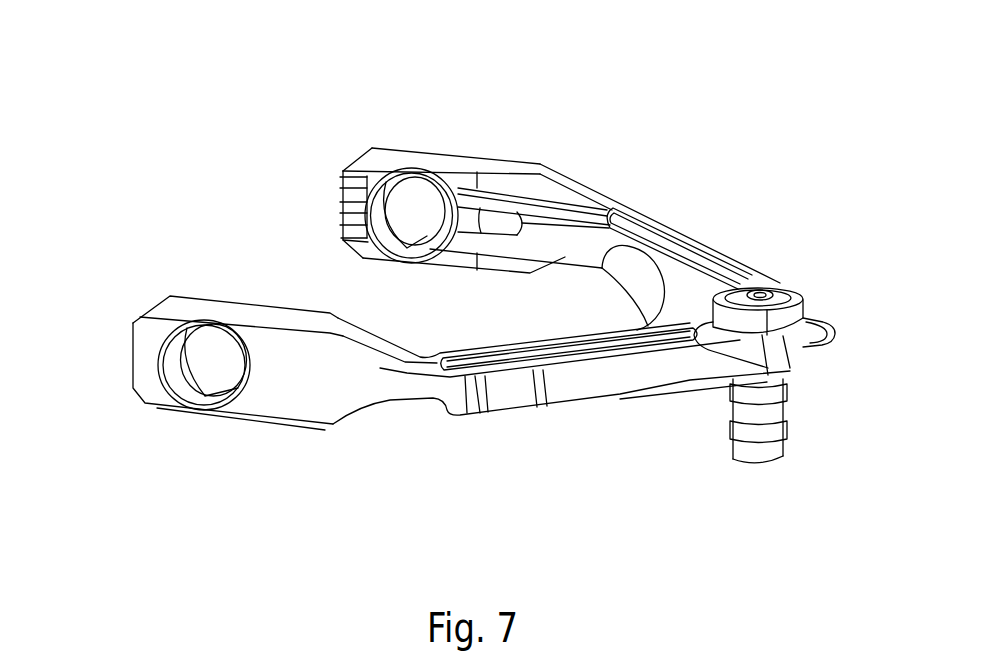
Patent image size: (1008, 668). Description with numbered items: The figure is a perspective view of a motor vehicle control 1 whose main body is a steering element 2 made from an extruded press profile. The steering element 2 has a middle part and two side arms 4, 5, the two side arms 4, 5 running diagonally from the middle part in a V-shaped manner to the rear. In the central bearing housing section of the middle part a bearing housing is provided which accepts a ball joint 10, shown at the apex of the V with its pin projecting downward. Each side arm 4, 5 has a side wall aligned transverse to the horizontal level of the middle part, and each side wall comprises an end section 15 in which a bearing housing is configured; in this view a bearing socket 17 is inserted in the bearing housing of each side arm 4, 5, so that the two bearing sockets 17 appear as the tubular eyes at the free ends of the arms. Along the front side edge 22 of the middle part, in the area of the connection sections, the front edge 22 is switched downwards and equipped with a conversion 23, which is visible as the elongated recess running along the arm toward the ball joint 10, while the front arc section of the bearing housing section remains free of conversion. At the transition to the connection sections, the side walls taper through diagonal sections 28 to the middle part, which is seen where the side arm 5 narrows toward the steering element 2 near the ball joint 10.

The motor vehicle control 1 is at (747, 107).
The steering element 2 is at (716, 248).
The side arm 4 is at (319, 392).
The side arm 5 is at (512, 165).
The ball joint 10 is at (803, 280).
The end section 15 is at (153, 410).
The bearing socket 17 is at (338, 212).
The front side edge 22 is at (773, 256).
The conversion 23 is at (604, 383).
The diagonal section 28 is at (573, 178).